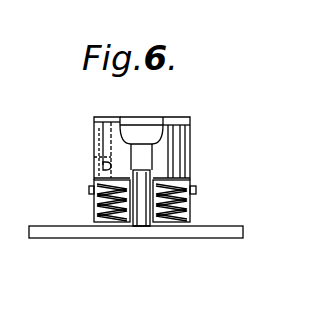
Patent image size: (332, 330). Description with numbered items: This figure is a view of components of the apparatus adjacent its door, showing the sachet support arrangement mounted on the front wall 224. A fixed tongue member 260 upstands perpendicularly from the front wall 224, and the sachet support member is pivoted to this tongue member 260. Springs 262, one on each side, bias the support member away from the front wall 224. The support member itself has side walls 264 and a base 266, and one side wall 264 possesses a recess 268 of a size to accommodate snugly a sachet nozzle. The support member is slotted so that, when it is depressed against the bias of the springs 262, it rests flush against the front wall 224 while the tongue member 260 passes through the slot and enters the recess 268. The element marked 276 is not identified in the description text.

The front wall 224 is at (202, 238).
The tongue member 260 is at (140, 224).
The springs 262 is at (94, 206).
The side walls 264 is at (94, 143).
The base 266 is at (96, 157).
The recess 268 is at (146, 126).
The stem 276 is at (141, 157).